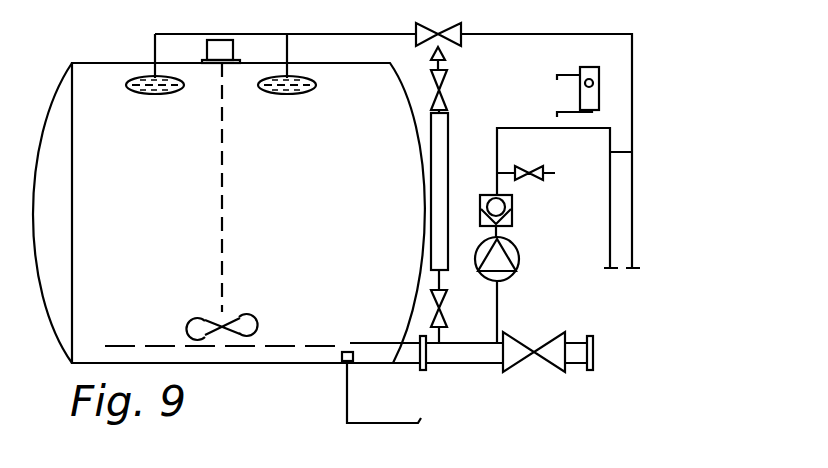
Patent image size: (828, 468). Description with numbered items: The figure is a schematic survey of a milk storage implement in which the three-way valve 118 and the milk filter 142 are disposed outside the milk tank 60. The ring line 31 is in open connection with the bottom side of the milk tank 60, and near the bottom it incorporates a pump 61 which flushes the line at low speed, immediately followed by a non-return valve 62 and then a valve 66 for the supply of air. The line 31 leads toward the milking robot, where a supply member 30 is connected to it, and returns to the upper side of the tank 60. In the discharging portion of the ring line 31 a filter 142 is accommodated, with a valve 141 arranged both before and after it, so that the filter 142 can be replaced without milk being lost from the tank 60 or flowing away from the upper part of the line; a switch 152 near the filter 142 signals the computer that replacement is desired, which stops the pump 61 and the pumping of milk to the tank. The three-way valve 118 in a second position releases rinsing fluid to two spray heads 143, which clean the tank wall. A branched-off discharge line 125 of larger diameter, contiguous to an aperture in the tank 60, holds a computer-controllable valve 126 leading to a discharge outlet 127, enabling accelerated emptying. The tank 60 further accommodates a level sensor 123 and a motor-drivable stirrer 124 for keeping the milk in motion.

The milk tank 60 is at (97, 68).
The motor-drivable stirrer 124 is at (226, 40).
The spray heads 143 is at (161, 96).
The three-way valve 118 is at (461, 34).
The circulating line 31 is at (632, 82).
The valve 141 is at (450, 80).
The filter 142 is at (450, 130).
The switch 152 is at (590, 67).
The supply member 30 is at (632, 213).
The air supply valve 66 is at (545, 176).
The non-return valve 62 is at (512, 222).
The pump 61 is at (519, 266).
The discharge line 125 is at (445, 364).
The valve 126 is at (553, 376).
The discharge outlet 127 is at (580, 343).
The level sensor 123 is at (343, 362).